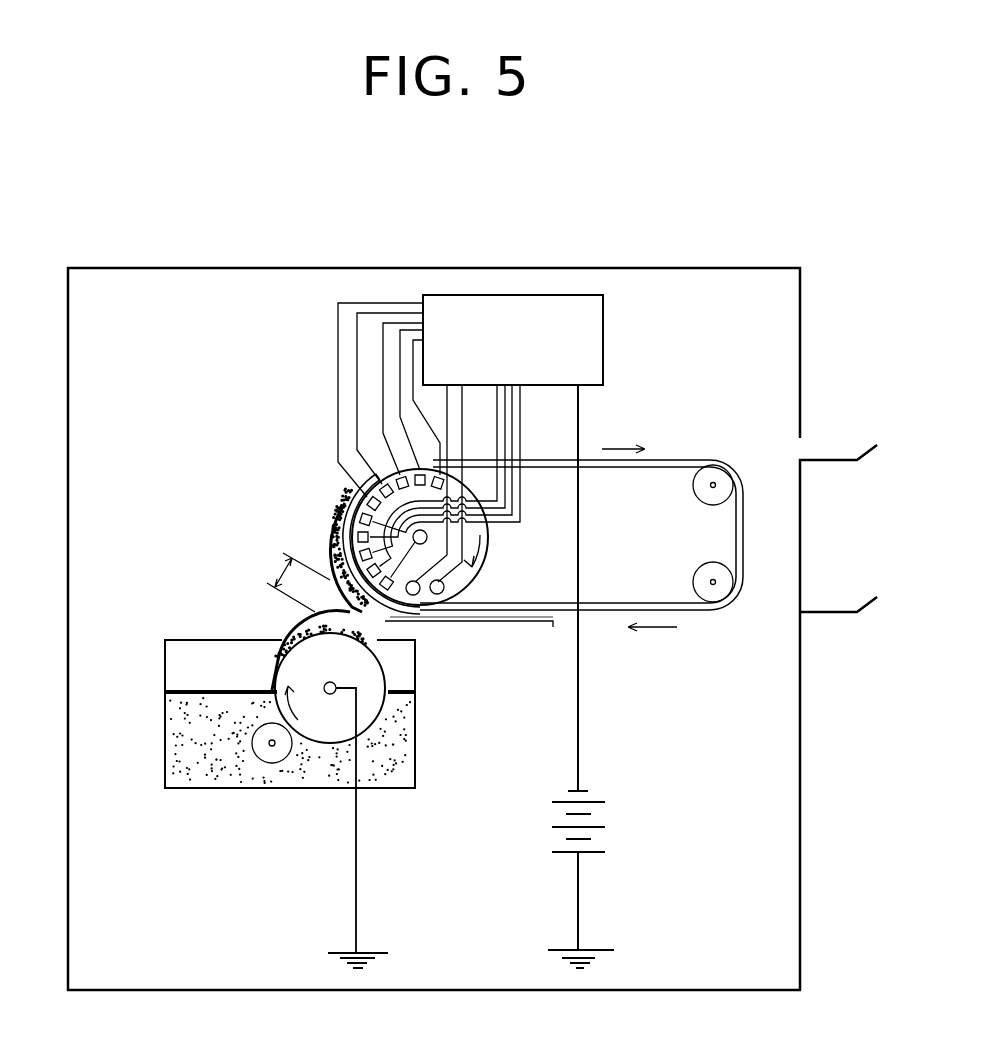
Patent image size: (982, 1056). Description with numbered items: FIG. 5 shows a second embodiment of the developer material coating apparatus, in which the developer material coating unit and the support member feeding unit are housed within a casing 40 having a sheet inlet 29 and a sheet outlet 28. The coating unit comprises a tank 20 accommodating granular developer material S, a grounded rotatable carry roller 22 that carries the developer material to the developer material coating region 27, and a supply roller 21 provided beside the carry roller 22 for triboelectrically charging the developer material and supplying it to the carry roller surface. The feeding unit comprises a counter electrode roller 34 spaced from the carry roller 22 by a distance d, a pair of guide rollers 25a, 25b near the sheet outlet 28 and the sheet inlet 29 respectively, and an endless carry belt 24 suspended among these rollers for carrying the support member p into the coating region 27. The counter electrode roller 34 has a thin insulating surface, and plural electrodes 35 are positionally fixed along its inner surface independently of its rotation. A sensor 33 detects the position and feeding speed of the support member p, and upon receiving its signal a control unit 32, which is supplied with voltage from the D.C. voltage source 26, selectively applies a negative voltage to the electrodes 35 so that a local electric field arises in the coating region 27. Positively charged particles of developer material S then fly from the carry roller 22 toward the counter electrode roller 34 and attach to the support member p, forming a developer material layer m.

The housing 40 is at (187, 268).
The control unit 32 is at (608, 343).
The sensor 33 is at (450, 583).
The counter electrode roller 34 is at (483, 537).
The electrodes 35 is at (375, 471).
The carry belt 24 is at (690, 458).
The guide roller 25a is at (693, 490).
The guide roller 25b is at (693, 582).
The support member p is at (518, 627).
The developer material coating region 27 is at (373, 622).
The sheet outlet 28 is at (832, 452).
The sheet inlet 29 is at (823, 602).
The developer material layer m is at (335, 520).
The distance d is at (292, 580).
The tank 20 is at (165, 752).
The developer material S is at (207, 690).
The carry roller 22 is at (373, 678).
The supply roller 21 is at (271, 764).
The D.C. voltage source 26 is at (598, 812).